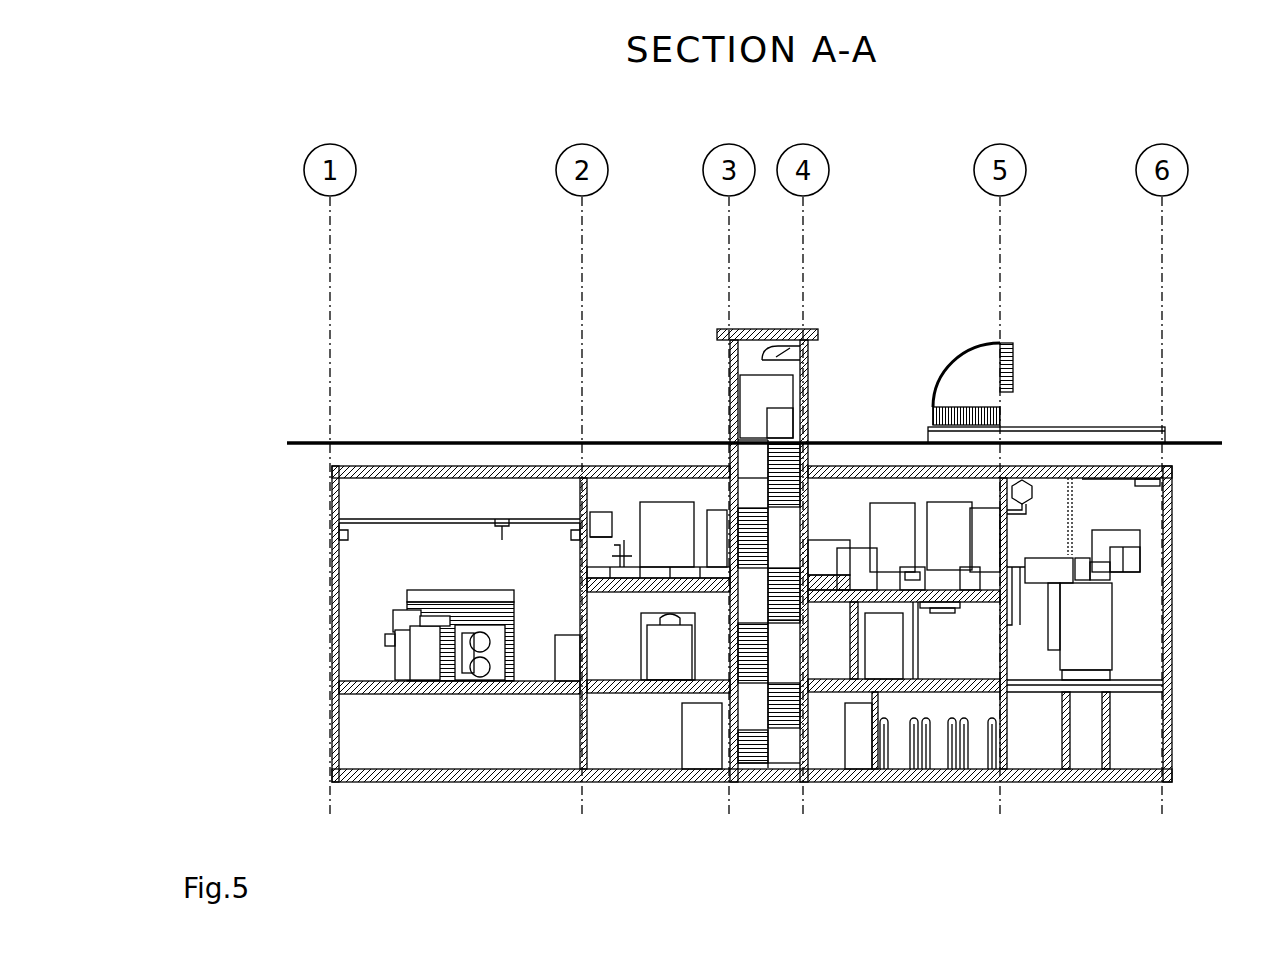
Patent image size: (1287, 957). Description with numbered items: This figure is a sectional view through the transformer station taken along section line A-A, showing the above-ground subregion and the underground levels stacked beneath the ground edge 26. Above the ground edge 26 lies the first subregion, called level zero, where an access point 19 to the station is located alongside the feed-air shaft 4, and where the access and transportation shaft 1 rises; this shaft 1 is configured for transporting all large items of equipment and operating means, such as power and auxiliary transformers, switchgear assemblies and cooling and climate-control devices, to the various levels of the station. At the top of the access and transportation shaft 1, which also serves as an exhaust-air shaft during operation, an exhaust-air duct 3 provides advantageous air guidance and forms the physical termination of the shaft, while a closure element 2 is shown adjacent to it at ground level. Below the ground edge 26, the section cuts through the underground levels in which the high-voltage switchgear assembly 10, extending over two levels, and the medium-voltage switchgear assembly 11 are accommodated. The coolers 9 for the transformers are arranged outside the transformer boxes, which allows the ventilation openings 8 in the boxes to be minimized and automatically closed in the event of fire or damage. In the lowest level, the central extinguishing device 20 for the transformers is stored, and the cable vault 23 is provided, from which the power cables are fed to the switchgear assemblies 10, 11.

The access and transportation shaft 1 is at (1140, 518).
The closure element 2 is at (1060, 427).
The exhaust-air duct 3 is at (993, 365).
The feed-air shaft 4 is at (818, 335).
The ventilation openings 8 is at (1162, 486).
The coolers for the transformers 9 is at (940, 540).
The high-voltage switchgear assembly 10 is at (408, 616).
The medium-voltage switchgear assembly 11 is at (682, 645).
The access point to the station 19 is at (780, 418).
The central extinguishing device 20 is at (927, 743).
The cable vault 23 is at (455, 728).
The ground edge 26 is at (312, 443).